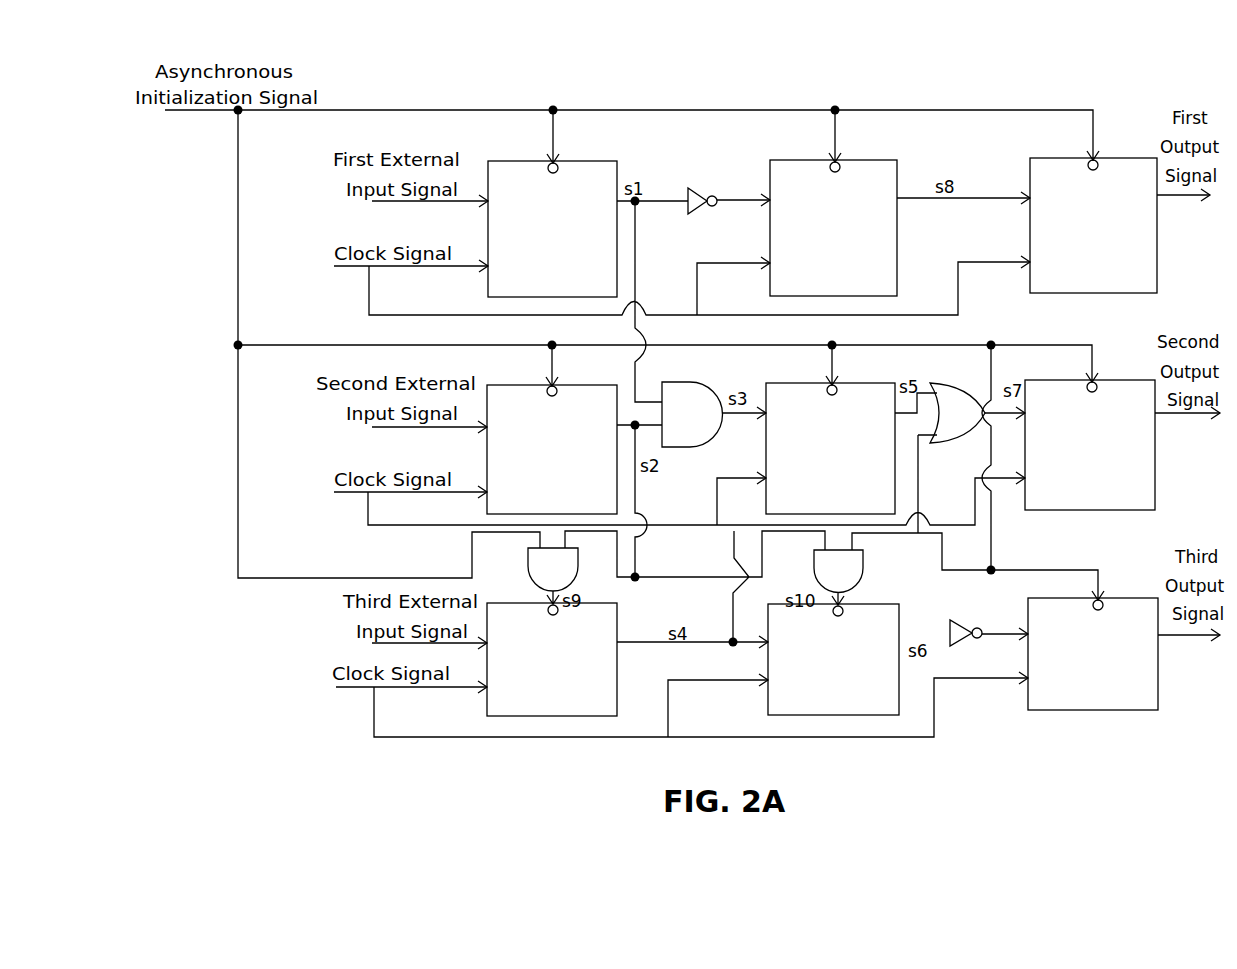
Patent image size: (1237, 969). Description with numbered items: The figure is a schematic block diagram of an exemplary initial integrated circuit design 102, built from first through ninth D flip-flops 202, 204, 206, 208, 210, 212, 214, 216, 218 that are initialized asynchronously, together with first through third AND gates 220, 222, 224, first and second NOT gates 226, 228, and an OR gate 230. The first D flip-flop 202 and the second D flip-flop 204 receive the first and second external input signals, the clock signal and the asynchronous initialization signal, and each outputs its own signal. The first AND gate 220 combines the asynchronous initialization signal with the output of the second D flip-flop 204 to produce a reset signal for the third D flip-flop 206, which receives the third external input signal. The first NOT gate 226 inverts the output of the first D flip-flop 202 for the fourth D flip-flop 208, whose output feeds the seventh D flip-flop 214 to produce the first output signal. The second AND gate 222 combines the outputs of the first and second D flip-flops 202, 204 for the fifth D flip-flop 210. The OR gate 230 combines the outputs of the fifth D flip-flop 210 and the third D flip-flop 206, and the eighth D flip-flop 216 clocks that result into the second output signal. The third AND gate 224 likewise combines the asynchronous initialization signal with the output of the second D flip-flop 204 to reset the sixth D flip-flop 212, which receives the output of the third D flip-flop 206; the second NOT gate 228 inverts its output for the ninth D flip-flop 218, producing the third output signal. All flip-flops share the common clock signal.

The integrated circuit design 102 is at (274, 748).
The first D flip-flop 202 is at (565, 161).
The second D flip-flop 204 is at (565, 385).
The third D flip-flop 206 is at (617, 632).
The fourth D flip-flop 208 is at (845, 160).
The fifth D flip-flop 210 is at (848, 383).
The sixth D flip-flop 212 is at (840, 604).
The seventh D flip-flop 214 is at (1100, 158).
The eighth D flip-flop 216 is at (1095, 380).
The ninth D flip-flop 218 is at (1100, 598).
The first AND gate 220 is at (528, 568).
The second AND gate 222 is at (655, 383).
The third AND gate 224 is at (814, 562).
The first NOT gate 226 is at (688, 192).
The second NOT gate 228 is at (950, 627).
The OR gate 230 is at (932, 388).